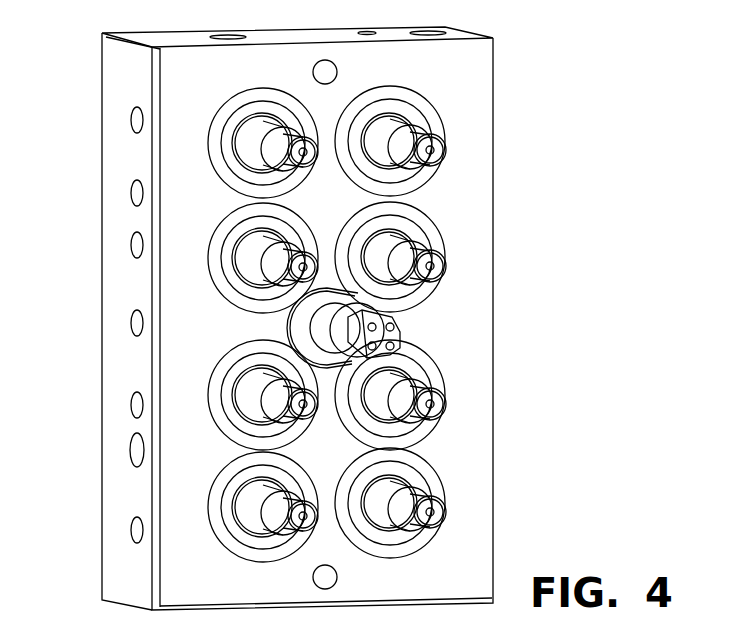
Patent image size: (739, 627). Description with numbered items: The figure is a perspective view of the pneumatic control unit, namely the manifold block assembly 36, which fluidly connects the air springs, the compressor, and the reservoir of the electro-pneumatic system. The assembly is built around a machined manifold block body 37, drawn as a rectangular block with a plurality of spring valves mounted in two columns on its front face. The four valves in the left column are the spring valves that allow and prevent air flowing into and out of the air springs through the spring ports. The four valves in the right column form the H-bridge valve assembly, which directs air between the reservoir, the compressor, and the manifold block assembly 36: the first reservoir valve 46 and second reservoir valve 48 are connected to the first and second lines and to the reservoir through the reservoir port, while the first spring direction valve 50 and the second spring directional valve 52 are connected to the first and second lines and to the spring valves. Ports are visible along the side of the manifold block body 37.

The manifold block assembly 36 is at (76, 16).
The manifold block body 37 is at (457, 64).
The first reservoir valve 46 is at (434, 149).
The second reservoir valve 48 is at (434, 265).
The first spring direction valve 50 is at (434, 403).
The second spring directional valve 52 is at (434, 511).